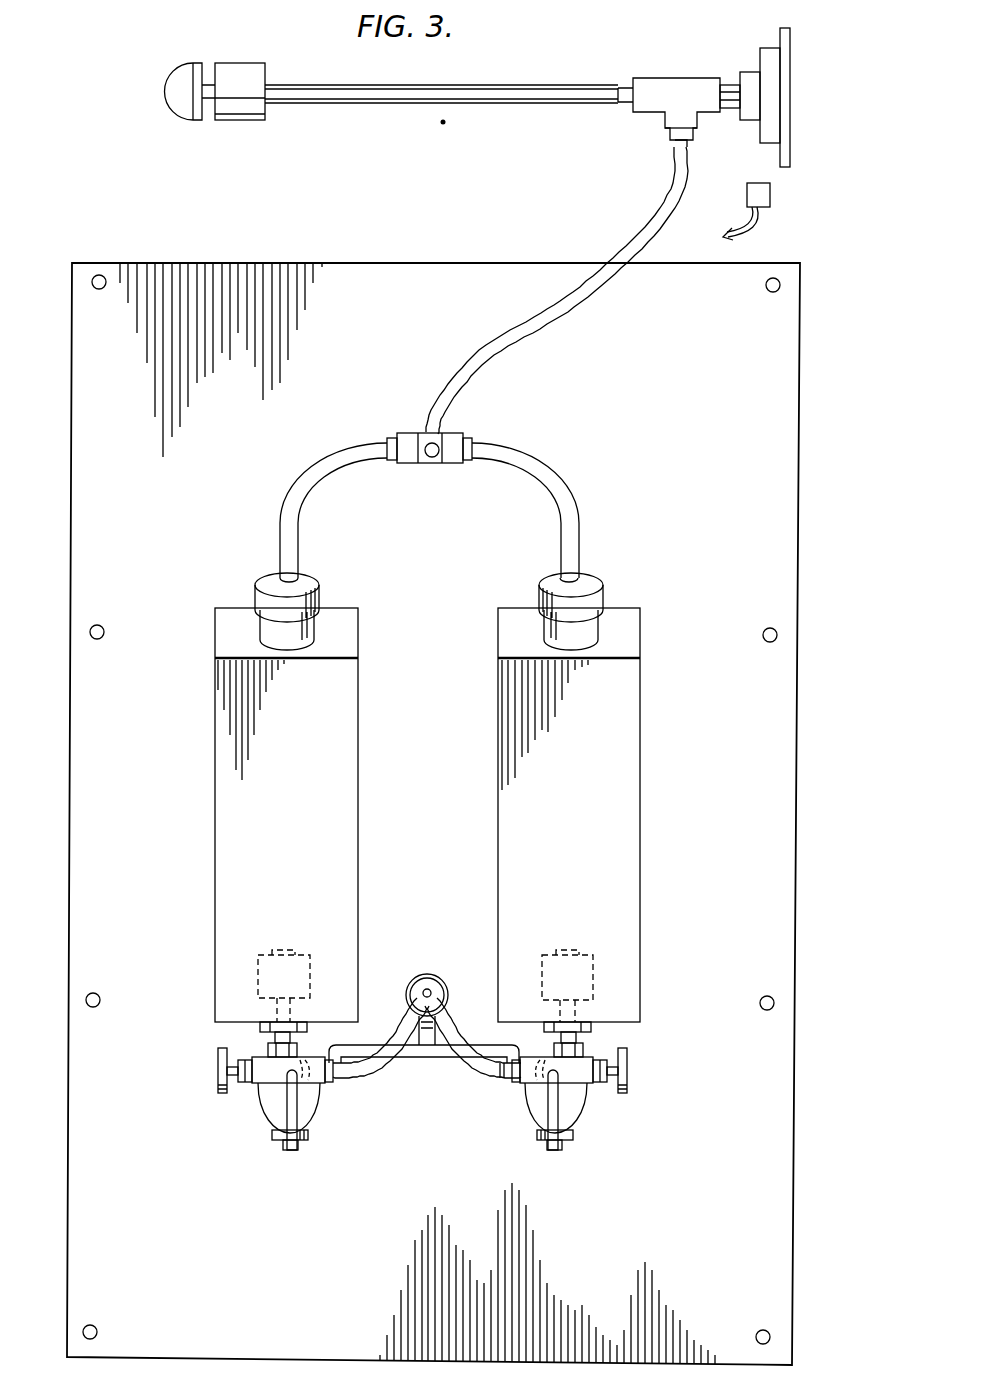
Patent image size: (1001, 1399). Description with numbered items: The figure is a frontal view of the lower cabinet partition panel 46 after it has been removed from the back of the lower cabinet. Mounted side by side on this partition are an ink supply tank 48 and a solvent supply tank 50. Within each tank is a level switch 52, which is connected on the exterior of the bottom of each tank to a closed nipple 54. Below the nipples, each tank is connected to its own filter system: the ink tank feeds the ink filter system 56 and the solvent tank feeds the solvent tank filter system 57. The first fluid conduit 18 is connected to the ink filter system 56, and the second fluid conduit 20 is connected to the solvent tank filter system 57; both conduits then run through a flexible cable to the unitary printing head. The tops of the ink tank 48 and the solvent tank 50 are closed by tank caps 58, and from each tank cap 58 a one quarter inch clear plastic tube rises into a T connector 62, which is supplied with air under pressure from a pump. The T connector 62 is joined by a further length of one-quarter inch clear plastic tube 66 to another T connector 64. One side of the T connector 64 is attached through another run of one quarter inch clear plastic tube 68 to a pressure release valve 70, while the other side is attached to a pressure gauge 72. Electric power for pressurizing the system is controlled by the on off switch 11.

The on off switch 11 is at (770, 193).
The first fluid conduit 18 is at (377, 1079).
The second fluid conduit 20 is at (490, 1079).
The lower cabinet partition panel 46 is at (799, 452).
The ink supply tank 48 is at (223, 742).
The solvent supply tank 50 is at (638, 749).
The level switch 52 is at (270, 953).
The closed nipple 54 is at (263, 1037).
The ink filter system 56 is at (268, 1108).
The solvent tank filter system 57 is at (577, 1117).
The tank cap 58 is at (319, 597).
The T connector 62 is at (456, 433).
The T connector 64 is at (700, 85).
The clear plastic tube 66 is at (608, 278).
The clear plastic tube 68 is at (557, 90).
The pressure release valve 70 is at (247, 118).
The pressure gauge 72 is at (792, 94).